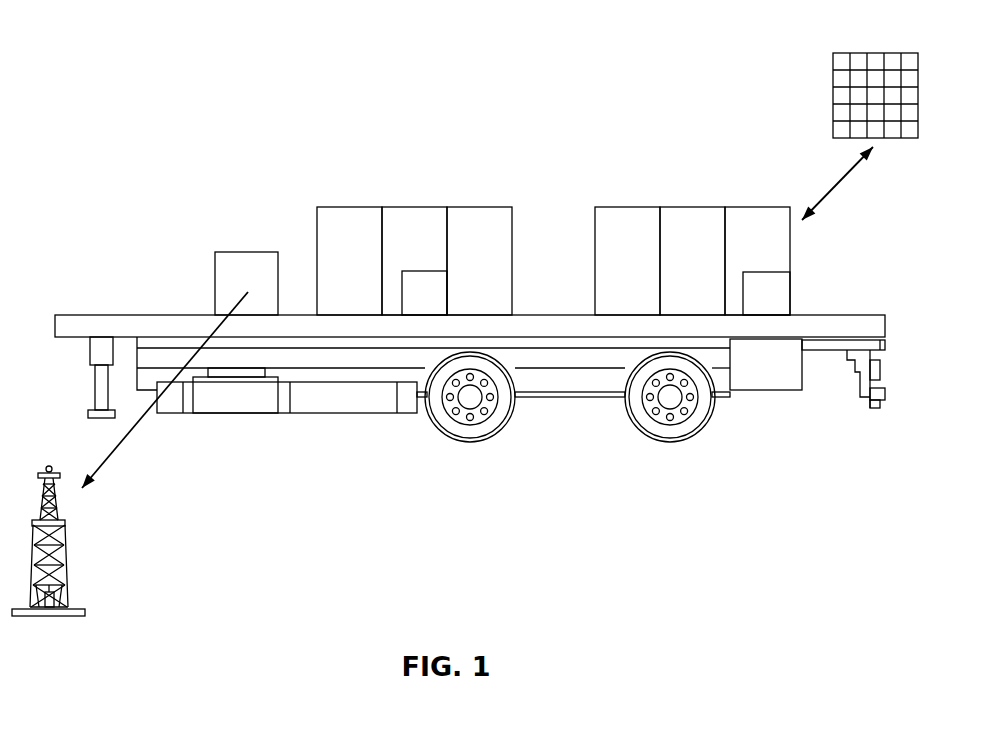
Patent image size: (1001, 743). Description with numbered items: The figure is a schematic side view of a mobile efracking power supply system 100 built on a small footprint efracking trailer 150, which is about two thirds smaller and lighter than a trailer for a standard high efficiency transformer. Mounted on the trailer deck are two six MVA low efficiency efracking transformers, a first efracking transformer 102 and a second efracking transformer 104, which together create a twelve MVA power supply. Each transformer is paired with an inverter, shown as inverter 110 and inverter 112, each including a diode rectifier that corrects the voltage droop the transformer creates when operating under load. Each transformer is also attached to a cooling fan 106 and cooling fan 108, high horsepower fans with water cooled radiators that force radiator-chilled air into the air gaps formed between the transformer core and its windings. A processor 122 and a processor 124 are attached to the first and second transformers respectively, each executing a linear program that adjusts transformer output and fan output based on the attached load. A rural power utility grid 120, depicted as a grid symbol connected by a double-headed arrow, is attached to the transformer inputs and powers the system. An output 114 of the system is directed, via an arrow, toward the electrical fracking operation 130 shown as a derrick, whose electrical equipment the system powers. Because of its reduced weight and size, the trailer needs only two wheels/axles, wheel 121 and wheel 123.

The mobile efracking power supply system 100 is at (225, 73).
The efracking trailer 150 is at (162, 313).
The output unit 114 is at (247, 252).
The inverter 110 is at (348, 207).
The first low efficiency efracking transformer 102 is at (417, 207).
The cooling fan 106 is at (485, 207).
The processor 122 is at (422, 317).
The inverter 112 is at (630, 207).
The second low efficiency efracking transformer 104 is at (693, 207).
The cooling fan 108 is at (752, 207).
The processor 124 is at (762, 317).
The rural power utility grid 120 is at (880, 138).
The wheel/axle 121 is at (470, 442).
The rear wheel 123 is at (675, 442).
The well site derrick 130 is at (62, 548).